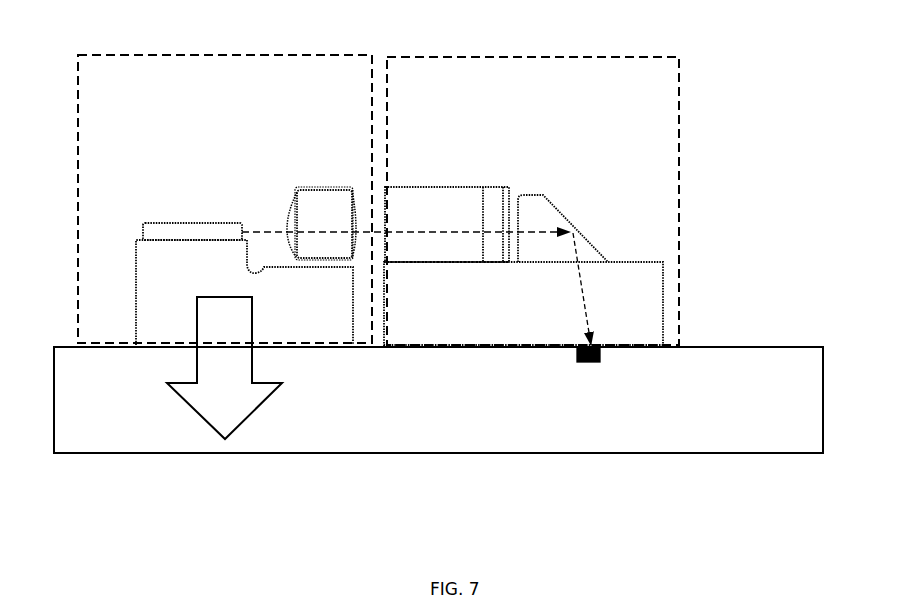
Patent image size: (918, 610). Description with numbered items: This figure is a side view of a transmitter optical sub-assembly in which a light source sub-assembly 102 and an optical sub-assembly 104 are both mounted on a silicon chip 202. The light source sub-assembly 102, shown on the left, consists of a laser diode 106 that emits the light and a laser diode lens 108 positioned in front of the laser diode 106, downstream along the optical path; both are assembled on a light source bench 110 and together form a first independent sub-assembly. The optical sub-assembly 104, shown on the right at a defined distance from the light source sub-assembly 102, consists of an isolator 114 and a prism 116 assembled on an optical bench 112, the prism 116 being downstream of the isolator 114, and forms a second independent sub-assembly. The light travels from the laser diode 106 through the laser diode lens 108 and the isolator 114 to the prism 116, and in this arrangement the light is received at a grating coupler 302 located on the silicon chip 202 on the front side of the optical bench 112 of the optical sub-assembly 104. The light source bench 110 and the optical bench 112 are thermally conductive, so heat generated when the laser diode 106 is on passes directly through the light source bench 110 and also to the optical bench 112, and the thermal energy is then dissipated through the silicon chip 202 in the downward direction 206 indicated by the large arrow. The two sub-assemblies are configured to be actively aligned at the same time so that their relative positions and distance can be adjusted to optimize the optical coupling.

The light source sub-assembly 102 is at (78, 183).
The optical sub-assembly 104 is at (683, 202).
The laser diode 106 is at (170, 231).
The laser diode lens 108 is at (322, 215).
The light source bench 110 is at (157, 318).
The optical bench 112 is at (663, 304).
The isolator 114 is at (434, 214).
The prism 116 is at (543, 220).
The silicon chip 202 is at (420, 454).
The downward direction 206 is at (198, 412).
The grating coupler 302 is at (598, 358).